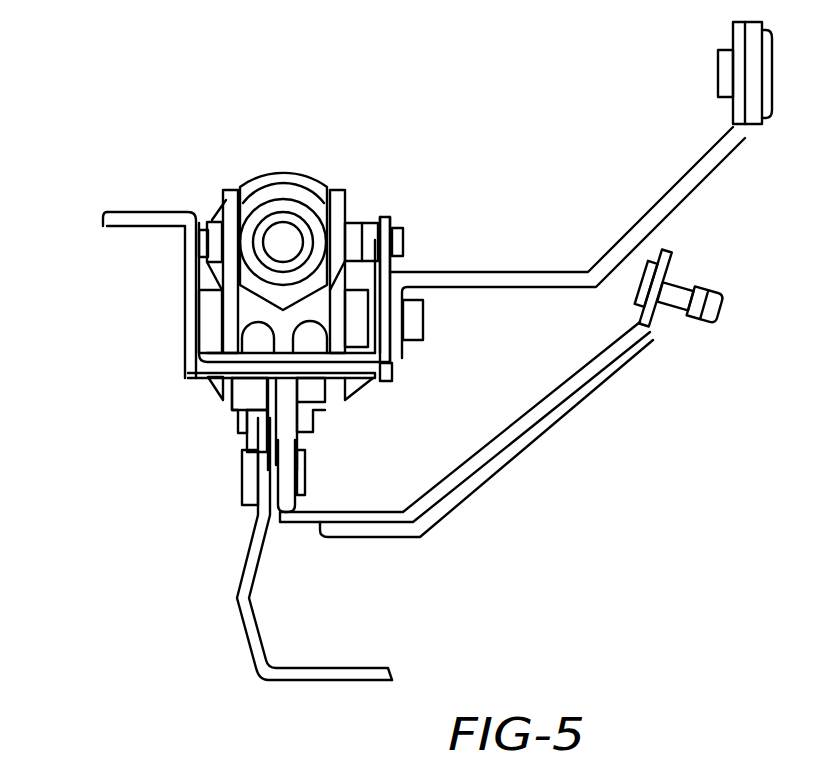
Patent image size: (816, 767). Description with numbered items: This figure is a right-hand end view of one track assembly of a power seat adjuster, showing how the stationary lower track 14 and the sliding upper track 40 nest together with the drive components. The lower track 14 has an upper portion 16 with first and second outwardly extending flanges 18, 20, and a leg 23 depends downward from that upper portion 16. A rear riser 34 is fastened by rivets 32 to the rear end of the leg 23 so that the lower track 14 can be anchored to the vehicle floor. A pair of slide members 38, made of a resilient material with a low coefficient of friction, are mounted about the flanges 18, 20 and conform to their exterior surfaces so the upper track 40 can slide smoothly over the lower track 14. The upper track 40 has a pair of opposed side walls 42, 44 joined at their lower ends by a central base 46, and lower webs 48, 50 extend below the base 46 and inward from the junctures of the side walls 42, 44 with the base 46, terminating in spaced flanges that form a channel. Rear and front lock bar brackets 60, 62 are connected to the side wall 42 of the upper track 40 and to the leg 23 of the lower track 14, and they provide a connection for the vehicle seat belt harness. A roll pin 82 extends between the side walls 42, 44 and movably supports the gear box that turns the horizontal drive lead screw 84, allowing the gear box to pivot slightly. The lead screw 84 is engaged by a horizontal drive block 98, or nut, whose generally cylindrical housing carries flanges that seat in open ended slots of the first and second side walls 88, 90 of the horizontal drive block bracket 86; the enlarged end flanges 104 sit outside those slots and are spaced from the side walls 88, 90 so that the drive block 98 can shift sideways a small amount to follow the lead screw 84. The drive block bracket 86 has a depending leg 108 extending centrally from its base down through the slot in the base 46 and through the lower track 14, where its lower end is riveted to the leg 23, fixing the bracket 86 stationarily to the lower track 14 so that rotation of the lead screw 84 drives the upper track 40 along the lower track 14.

The lower track 14 is at (307, 438).
The upper portion 16 is at (320, 430).
The first outwardly extending flange 18 is at (323, 405).
The second outwardly extending flange 20 is at (220, 418).
The leg 23 is at (236, 444).
The rivets 32 is at (240, 485).
The rear riser 34 is at (272, 684).
The slide members 38 is at (213, 385).
The upper track 40 is at (177, 270).
The side wall 42 is at (388, 270).
The side wall 44 is at (190, 288).
The central base 46 is at (378, 362).
The lower web 48 is at (222, 408).
The lower web 50 is at (393, 378).
The rear lock bar bracket 60 is at (662, 206).
The front lock bar bracket 62 is at (552, 422).
The roll pin 82 is at (403, 233).
The horizontal drive lead screw 84 is at (278, 228).
The horizontal drive block bracket 86 is at (213, 188).
The first side wall 88 is at (337, 190).
The second side wall 90 is at (217, 203).
The horizontal drive block 98 is at (298, 178).
The end flanges 104 is at (220, 227).
The depending leg 108 is at (283, 346).